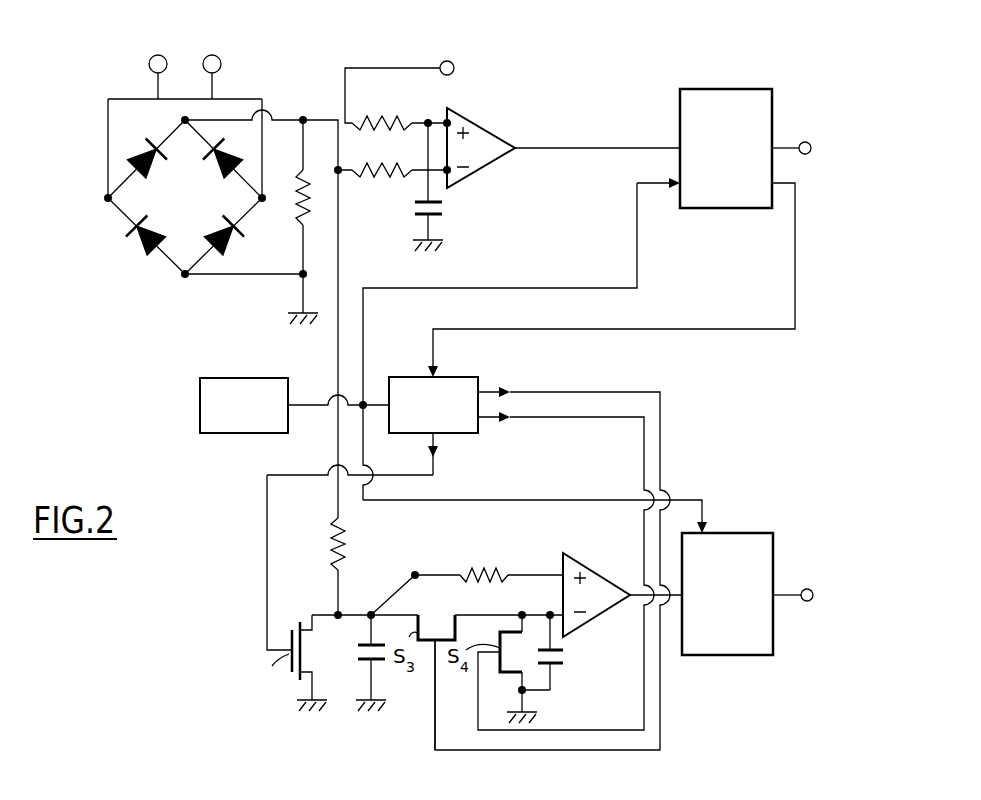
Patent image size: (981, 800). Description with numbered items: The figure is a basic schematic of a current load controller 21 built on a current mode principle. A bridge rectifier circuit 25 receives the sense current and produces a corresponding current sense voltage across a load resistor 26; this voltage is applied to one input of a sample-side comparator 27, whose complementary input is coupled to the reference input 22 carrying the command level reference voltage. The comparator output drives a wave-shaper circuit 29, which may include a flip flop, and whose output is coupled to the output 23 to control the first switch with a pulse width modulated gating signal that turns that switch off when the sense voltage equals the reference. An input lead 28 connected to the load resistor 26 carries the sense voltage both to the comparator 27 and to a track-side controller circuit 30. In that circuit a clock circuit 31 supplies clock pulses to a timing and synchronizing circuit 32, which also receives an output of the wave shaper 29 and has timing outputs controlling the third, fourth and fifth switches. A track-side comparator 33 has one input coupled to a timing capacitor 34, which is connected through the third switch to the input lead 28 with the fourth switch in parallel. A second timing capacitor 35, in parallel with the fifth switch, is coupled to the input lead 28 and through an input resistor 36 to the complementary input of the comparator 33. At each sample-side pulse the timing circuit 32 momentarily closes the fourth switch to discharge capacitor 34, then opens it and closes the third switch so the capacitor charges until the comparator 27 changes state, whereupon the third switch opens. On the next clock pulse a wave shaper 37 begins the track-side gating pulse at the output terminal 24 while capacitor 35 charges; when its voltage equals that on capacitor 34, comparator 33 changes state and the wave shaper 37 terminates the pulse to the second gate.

The current load controller 21 is at (738, 416).
The reference input 22 is at (445, 60).
The output 23 is at (786, 152).
The output terminal 24 is at (787, 600).
The bridge rectifier circuit 25 is at (128, 238).
The load resistor 26 is at (298, 212).
The sample-side comparator 27 is at (487, 170).
The input lead 28 is at (340, 220).
The wave-shaper circuit 29 is at (725, 89).
The track-side controller circuit 30 is at (392, 751).
The clock circuit 31 is at (238, 380).
The timing and synchronizing circuit 32 is at (460, 433).
The track-side comparator 33 is at (600, 573).
The timing capacitor 34 is at (560, 668).
The timing capacitor 35 is at (361, 663).
The input resistor 36 is at (490, 568).
The wave shaper 37 is at (727, 655).